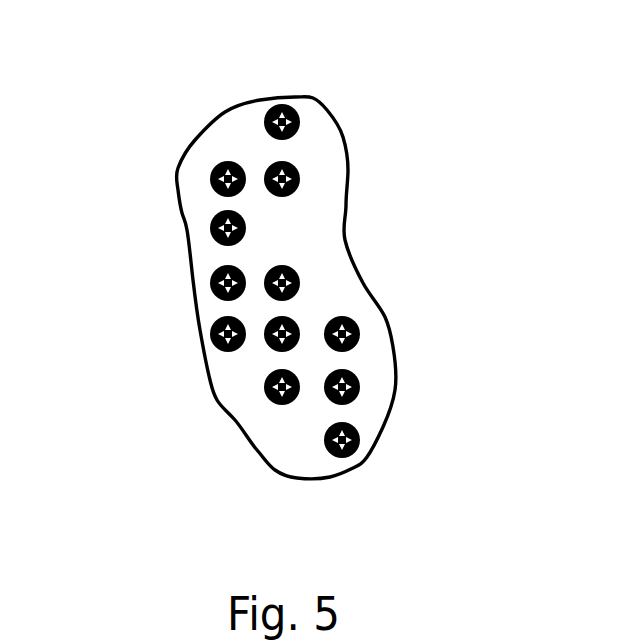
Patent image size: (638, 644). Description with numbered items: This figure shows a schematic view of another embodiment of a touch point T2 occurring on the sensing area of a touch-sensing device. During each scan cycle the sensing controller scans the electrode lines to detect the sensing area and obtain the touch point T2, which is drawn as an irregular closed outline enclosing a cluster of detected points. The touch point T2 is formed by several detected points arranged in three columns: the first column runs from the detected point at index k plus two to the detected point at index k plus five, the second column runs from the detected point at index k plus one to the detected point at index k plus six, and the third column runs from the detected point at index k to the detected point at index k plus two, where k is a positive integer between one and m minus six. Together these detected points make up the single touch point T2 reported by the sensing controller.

The touch point T2 is at (348, 203).